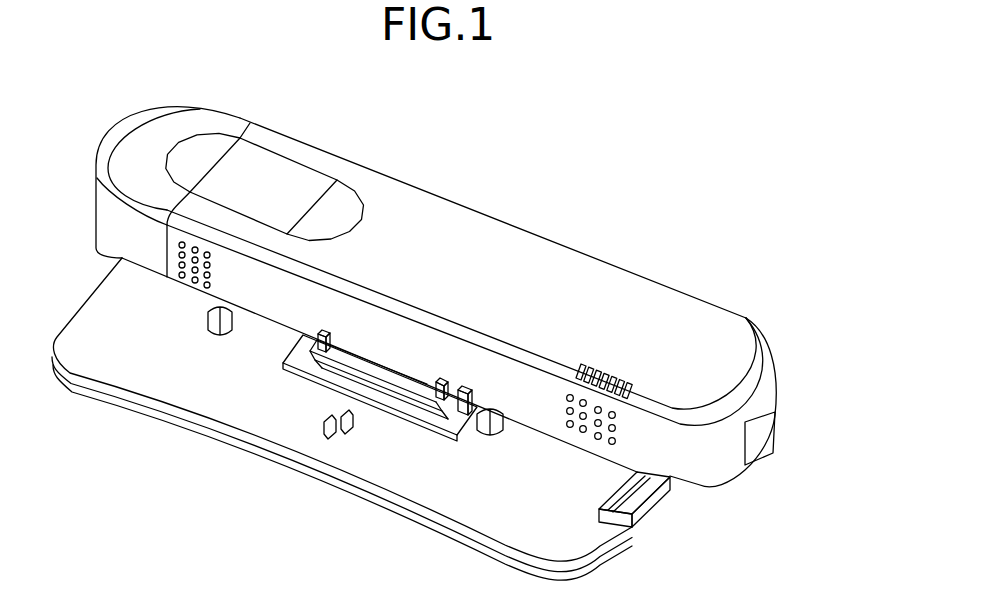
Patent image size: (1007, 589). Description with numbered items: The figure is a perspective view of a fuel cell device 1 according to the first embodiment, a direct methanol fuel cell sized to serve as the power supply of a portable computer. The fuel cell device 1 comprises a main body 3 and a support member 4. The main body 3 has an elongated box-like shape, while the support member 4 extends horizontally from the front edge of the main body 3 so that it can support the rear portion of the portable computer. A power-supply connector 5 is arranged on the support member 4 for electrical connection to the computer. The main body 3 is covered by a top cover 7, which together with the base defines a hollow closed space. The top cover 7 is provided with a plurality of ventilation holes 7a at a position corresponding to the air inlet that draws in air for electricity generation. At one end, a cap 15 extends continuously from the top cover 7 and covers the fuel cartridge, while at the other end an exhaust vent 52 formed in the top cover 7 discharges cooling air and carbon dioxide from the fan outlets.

The fuel cell device 1 is at (556, 168).
The main body 3 is at (713, 302).
The support member 4 is at (425, 483).
The power-supply connector 5 is at (345, 358).
The top cover 7 is at (420, 228).
The ventilation holes 7a is at (203, 280).
The cap 15 is at (135, 142).
The exhaust vent 52 is at (770, 421).